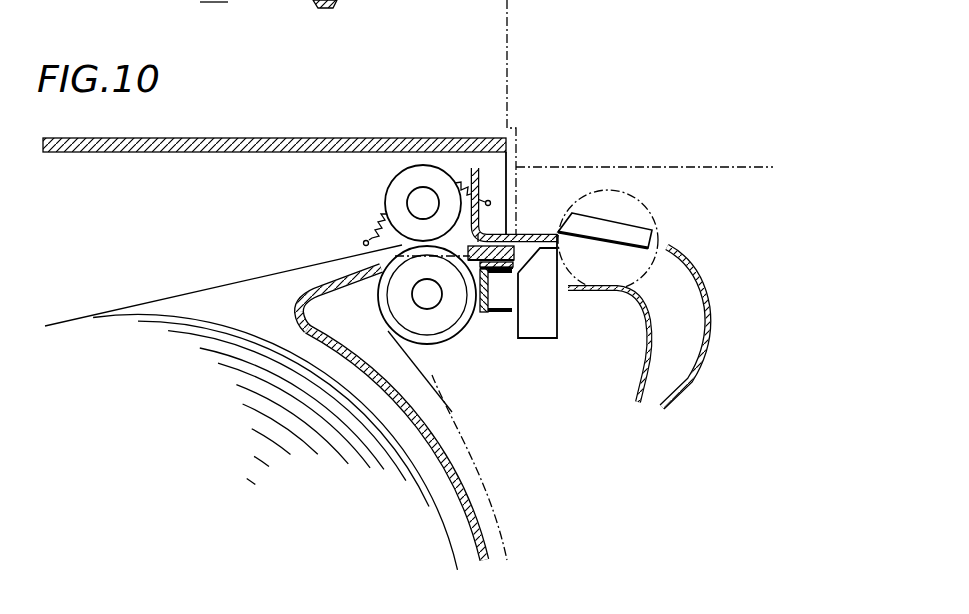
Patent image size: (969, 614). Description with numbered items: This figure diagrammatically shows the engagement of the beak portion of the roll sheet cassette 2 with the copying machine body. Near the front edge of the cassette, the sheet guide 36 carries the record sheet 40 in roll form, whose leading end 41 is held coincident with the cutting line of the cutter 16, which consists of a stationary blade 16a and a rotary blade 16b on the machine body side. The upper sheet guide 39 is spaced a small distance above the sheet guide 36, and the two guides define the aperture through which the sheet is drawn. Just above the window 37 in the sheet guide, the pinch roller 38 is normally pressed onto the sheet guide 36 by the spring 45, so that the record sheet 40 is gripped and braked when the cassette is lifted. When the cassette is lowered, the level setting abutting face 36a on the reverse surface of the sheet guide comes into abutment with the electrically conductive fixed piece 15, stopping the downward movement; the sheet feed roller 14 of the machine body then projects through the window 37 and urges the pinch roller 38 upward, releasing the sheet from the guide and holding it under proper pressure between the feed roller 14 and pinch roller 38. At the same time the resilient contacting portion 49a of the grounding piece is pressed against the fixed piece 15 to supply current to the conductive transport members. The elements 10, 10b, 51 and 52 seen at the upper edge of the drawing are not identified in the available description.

The roll sheet cassette 2 is at (467, 497).
The cassette 10 is at (378, 0).
The cassette portion 10b is at (290, 0).
The sheet feed roller 14 is at (450, 338).
The fixed piece 15 is at (503, 315).
The cutter 16 is at (815, 290).
The stationary blade 16a is at (687, 266).
The rotary blade 16b is at (657, 230).
The sheet guide 36 is at (337, 278).
The level setting abutting face 36a is at (536, 235).
The window 37 is at (453, 180).
The pinch roller 38 is at (415, 167).
The upper sheet guide 39 is at (512, 176).
The record sheet 40 is at (240, 318).
The leading end 41 is at (558, 227).
The spring 45 is at (372, 222).
The contacting portion 49a is at (470, 307).
The element 51 is at (233, 15).
The element 52 is at (439, 18).